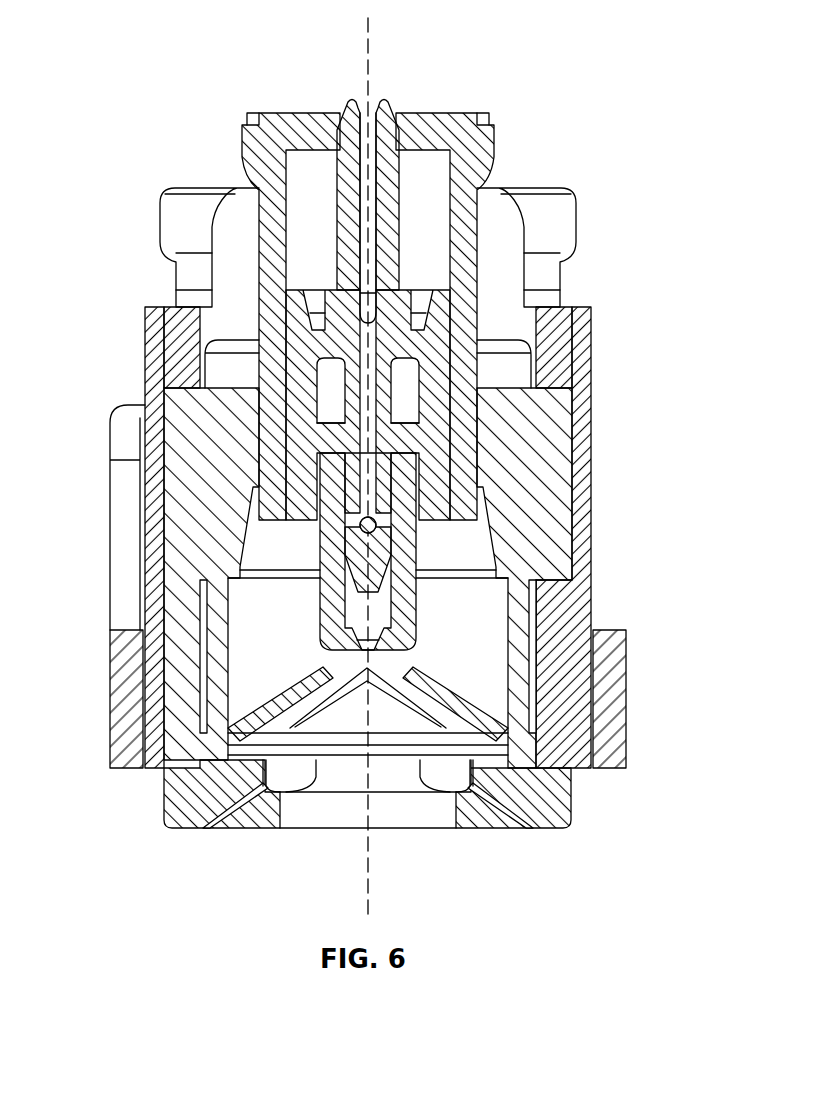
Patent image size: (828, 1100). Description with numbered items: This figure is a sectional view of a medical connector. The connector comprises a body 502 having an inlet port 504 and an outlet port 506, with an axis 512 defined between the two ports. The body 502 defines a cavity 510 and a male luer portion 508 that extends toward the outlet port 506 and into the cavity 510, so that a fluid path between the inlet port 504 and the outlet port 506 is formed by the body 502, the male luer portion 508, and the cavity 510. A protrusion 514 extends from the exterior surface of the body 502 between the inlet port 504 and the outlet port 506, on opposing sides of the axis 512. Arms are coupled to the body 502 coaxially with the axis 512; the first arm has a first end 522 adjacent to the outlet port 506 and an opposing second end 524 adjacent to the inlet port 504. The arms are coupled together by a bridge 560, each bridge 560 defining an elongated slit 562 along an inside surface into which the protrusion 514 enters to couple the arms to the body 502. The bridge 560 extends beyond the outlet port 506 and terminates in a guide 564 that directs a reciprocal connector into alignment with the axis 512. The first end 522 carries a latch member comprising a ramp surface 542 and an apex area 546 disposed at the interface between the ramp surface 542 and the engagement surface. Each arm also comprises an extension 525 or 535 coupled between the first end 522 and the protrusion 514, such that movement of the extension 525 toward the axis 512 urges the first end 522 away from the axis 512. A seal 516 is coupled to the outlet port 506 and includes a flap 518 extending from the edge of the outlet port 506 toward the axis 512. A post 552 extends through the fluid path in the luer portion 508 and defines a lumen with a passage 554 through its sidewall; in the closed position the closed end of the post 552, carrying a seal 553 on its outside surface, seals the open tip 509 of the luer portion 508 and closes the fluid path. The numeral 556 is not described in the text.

The axis 512 is at (371, 36).
The inlet port 504 is at (458, 108).
The body 502 is at (473, 272).
The second end 524 is at (528, 188).
The elongated slit 562 is at (177, 342).
The bridge 560 is at (155, 358).
The latch 556 is at (303, 366).
The post 552 is at (347, 393).
The protrusion 514 is at (172, 432).
The cavity 510 is at (227, 553).
The seal 553 is at (355, 573).
The passage 554 is at (385, 527).
The extension 525 is at (120, 583).
The male luer portion 508 is at (332, 588).
The open tip 509 is at (355, 653).
The flap 518 is at (226, 728).
The seal 516 is at (258, 742).
The extension 535 is at (608, 697).
The guide 564 is at (553, 800).
The first end 522 is at (536, 827).
The outlet port 506 is at (410, 766).
The ramp surface 542 is at (272, 812).
The apex area 546 is at (340, 770).